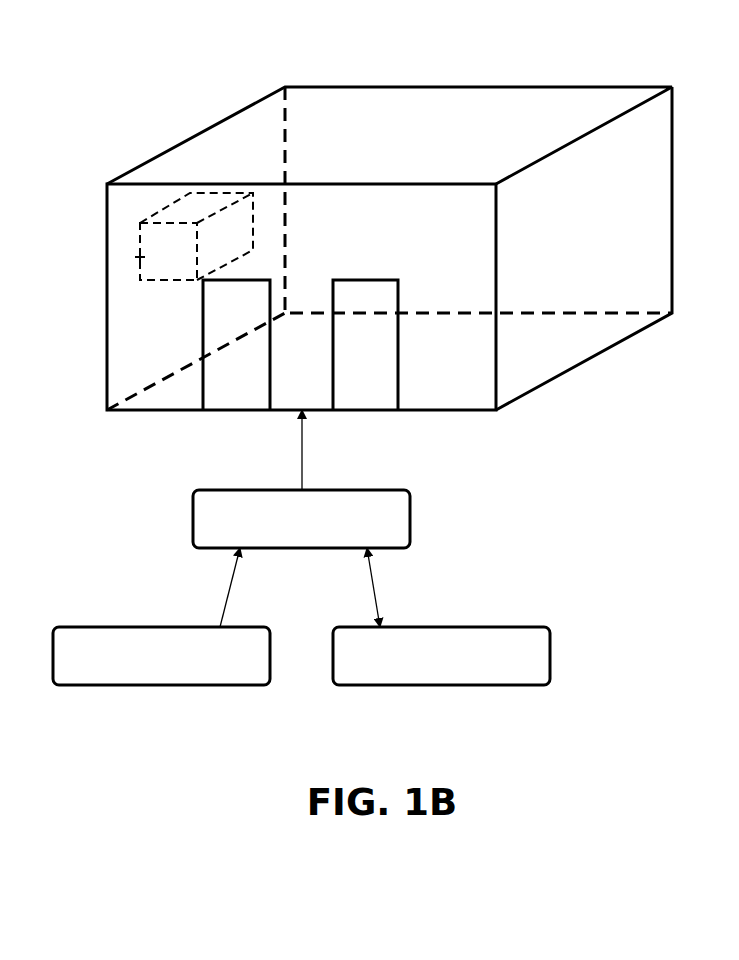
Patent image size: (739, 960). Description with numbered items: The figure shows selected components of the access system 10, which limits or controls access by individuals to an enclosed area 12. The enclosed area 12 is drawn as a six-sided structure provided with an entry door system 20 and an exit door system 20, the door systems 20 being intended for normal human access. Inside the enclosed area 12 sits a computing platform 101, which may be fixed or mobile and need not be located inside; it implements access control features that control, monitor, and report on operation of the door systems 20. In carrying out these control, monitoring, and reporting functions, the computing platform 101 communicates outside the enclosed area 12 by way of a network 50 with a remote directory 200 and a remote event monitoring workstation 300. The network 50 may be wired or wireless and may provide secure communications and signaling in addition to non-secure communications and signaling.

The access system 10 is at (403, 150).
The enclosed area 12 is at (527, 103).
The computing platform 101 is at (134, 257).
The door system 20 is at (237, 402).
The network 50 is at (410, 520).
The directory 200 is at (53, 657).
The event monitoring workstation 300 is at (550, 657).